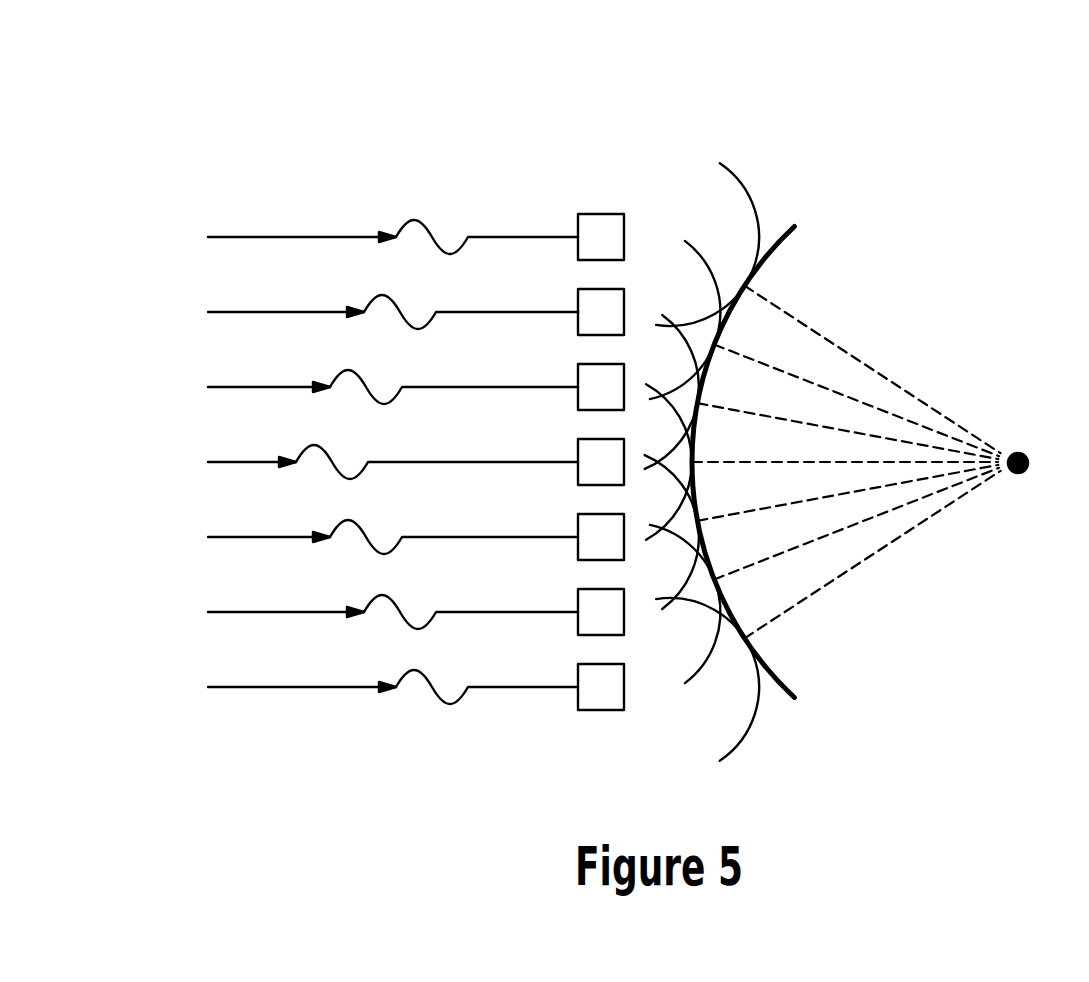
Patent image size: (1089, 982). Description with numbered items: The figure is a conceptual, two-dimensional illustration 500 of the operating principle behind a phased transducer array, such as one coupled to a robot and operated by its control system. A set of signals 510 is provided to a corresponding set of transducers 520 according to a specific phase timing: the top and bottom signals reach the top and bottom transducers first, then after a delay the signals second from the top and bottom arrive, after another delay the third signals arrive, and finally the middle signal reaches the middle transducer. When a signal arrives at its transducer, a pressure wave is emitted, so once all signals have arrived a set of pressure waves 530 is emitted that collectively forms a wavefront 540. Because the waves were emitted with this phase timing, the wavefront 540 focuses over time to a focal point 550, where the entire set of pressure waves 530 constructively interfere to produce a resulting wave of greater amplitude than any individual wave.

The conceptual illustration 500 is at (309, 100).
The set of signals 510 is at (442, 190).
The set of transducers 520 is at (599, 190).
The set of pressure waves 530 is at (752, 170).
The wavefront 540 is at (801, 238).
The focal point 550 is at (1023, 453).